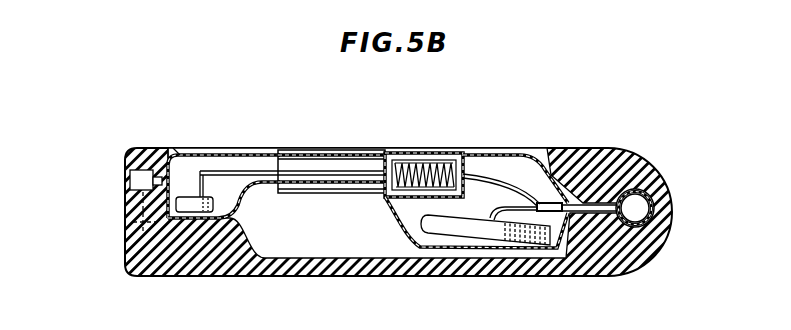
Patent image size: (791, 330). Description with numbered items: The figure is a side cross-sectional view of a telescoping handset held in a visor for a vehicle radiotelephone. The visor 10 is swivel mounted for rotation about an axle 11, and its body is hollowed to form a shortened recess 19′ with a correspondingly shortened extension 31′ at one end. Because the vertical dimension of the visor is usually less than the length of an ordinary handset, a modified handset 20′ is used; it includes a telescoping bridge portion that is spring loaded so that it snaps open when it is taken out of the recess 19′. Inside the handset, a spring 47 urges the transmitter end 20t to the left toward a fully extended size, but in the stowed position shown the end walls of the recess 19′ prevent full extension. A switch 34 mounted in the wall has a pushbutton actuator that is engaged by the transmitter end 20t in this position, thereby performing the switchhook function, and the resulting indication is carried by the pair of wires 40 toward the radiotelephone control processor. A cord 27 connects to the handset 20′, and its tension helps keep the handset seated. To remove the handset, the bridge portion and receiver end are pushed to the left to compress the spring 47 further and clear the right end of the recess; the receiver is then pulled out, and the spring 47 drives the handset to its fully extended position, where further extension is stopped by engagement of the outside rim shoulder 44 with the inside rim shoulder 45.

The visor 10 is at (143, 257).
The axle 11 is at (672, 207).
The recess 19′ is at (342, 236).
The transmitter end 20t is at (182, 178).
The modified handset 20′ is at (505, 166).
The cord 27 is at (580, 203).
The extension 31′ is at (174, 148).
The switch 34 is at (130, 178).
The pair of wires 40 is at (143, 223).
The outside rim shoulder 44 is at (383, 150).
The inside rim shoulder 45 is at (278, 149).
The spring 47 is at (417, 150).